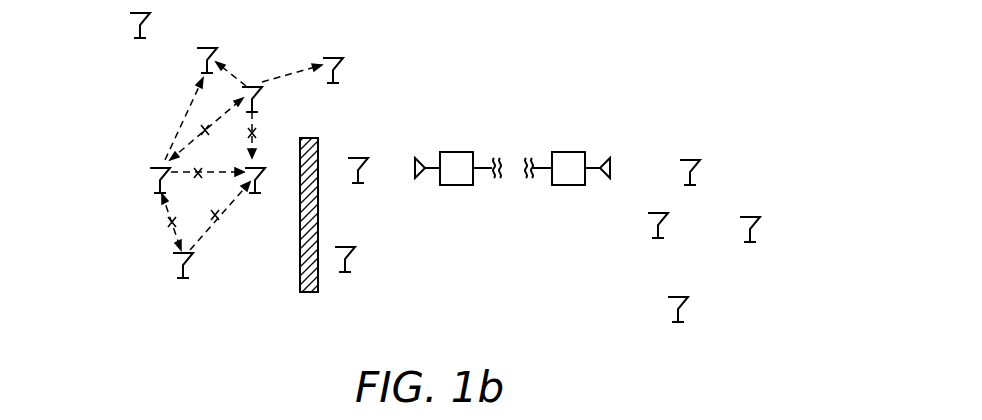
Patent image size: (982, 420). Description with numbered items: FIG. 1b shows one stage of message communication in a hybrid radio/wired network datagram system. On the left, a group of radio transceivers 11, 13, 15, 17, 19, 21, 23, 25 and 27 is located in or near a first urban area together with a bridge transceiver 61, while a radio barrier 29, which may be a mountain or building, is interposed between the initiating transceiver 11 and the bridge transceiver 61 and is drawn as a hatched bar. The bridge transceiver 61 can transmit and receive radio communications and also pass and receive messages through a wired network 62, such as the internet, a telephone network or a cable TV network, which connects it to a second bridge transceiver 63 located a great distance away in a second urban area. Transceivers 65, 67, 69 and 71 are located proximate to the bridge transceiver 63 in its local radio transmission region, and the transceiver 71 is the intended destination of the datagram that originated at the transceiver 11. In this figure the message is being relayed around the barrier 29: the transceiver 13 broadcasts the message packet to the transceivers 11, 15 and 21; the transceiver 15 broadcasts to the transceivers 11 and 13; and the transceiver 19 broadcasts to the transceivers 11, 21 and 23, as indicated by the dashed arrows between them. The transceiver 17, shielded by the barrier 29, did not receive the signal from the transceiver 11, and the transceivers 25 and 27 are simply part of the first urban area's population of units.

The transceiver 11 is at (258, 194).
The transceiver 13 is at (158, 194).
The transceiver 15 is at (181, 278).
The transceiver 17 is at (347, 272).
The transceiver 19 is at (256, 104).
The transceiver 21 is at (202, 70).
The transceiver 23 is at (336, 84).
The transceiver 25 is at (138, 38).
The transceiver 27 is at (360, 183).
The radio barrier 29 is at (305, 292).
The bridge transceiver 61 is at (456, 152).
The wired network 62 is at (542, 159).
The bridge transceiver 63 is at (570, 152).
The transceiver 65 is at (692, 178).
The transceiver 67 is at (655, 232).
The transceiver 69 is at (748, 236).
The transceiver 71 is at (675, 316).